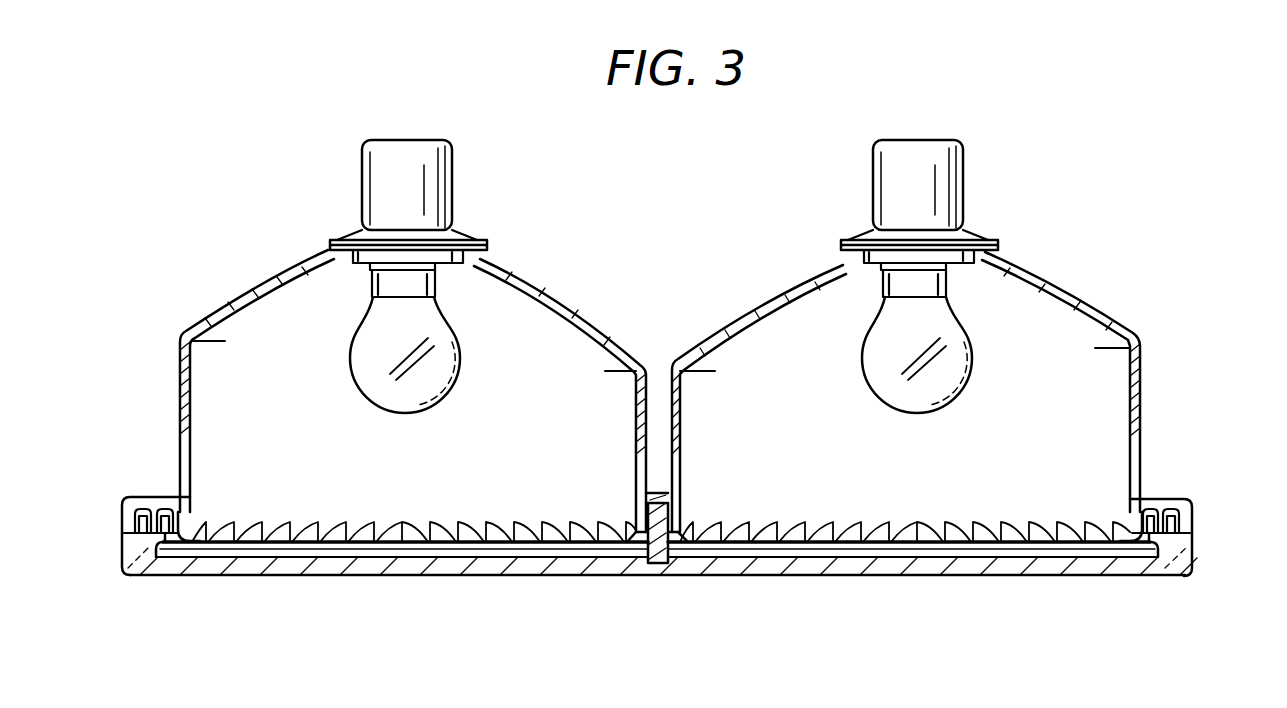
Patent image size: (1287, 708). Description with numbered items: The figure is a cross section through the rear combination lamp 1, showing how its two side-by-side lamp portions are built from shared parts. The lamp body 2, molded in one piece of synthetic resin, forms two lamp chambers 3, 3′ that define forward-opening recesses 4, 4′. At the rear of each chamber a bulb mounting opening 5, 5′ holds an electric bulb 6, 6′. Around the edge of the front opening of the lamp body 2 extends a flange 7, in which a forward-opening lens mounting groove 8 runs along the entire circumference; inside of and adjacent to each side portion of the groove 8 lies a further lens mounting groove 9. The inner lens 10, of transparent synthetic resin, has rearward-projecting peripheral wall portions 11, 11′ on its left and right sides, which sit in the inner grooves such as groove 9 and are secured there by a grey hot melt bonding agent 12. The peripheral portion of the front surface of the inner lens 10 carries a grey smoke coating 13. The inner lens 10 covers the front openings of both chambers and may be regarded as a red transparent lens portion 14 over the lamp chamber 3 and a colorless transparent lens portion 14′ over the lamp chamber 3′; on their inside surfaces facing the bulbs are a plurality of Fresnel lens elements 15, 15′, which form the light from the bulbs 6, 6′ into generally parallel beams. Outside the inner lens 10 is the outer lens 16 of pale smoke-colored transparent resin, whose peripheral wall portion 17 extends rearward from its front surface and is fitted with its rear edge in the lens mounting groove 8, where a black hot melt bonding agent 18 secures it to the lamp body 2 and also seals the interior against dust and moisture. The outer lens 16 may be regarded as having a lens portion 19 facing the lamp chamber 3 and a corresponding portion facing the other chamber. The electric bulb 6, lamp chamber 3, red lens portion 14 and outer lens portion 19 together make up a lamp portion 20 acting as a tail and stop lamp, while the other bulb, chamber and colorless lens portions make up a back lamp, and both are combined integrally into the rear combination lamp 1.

The rear combination lamp 1 is at (660, 411).
The lamp body 2 is at (1085, 302).
The lamp chamber 3 is at (182, 392).
The lamp chamber 3′ is at (1135, 395).
The recess 4 is at (525, 302).
The recess 4′ is at (765, 310).
The bulb mounting opening 5 is at (355, 250).
The bulb mounting opening 5′ is at (848, 250).
The electric bulb 6 is at (458, 342).
The electric bulb 6′ is at (858, 364).
The flange 7 is at (1175, 499).
The lens mounting groove 8 is at (142, 546).
The lens mounting groove 9 is at (186, 535).
The inner lens 10 is at (470, 560).
The peripheral wall portion 11 is at (150, 506).
The peripheral wall portion 11′ is at (1157, 512).
The hot melt bonding agent 12 is at (182, 518).
The smoke coating 13 is at (248, 548).
The lens portion 14 is at (315, 547).
The lens portion 14′ is at (968, 547).
The Fresnel lens elements 15 is at (335, 526).
The Fresnel lens elements 15′ is at (845, 528).
The outer lens 16 is at (787, 562).
The peripheral wall portion 17 is at (124, 512).
The hot melt bonding agent 18 is at (135, 498).
The lens portion 19 is at (522, 576).
The lamp portion 20 is at (374, 579).